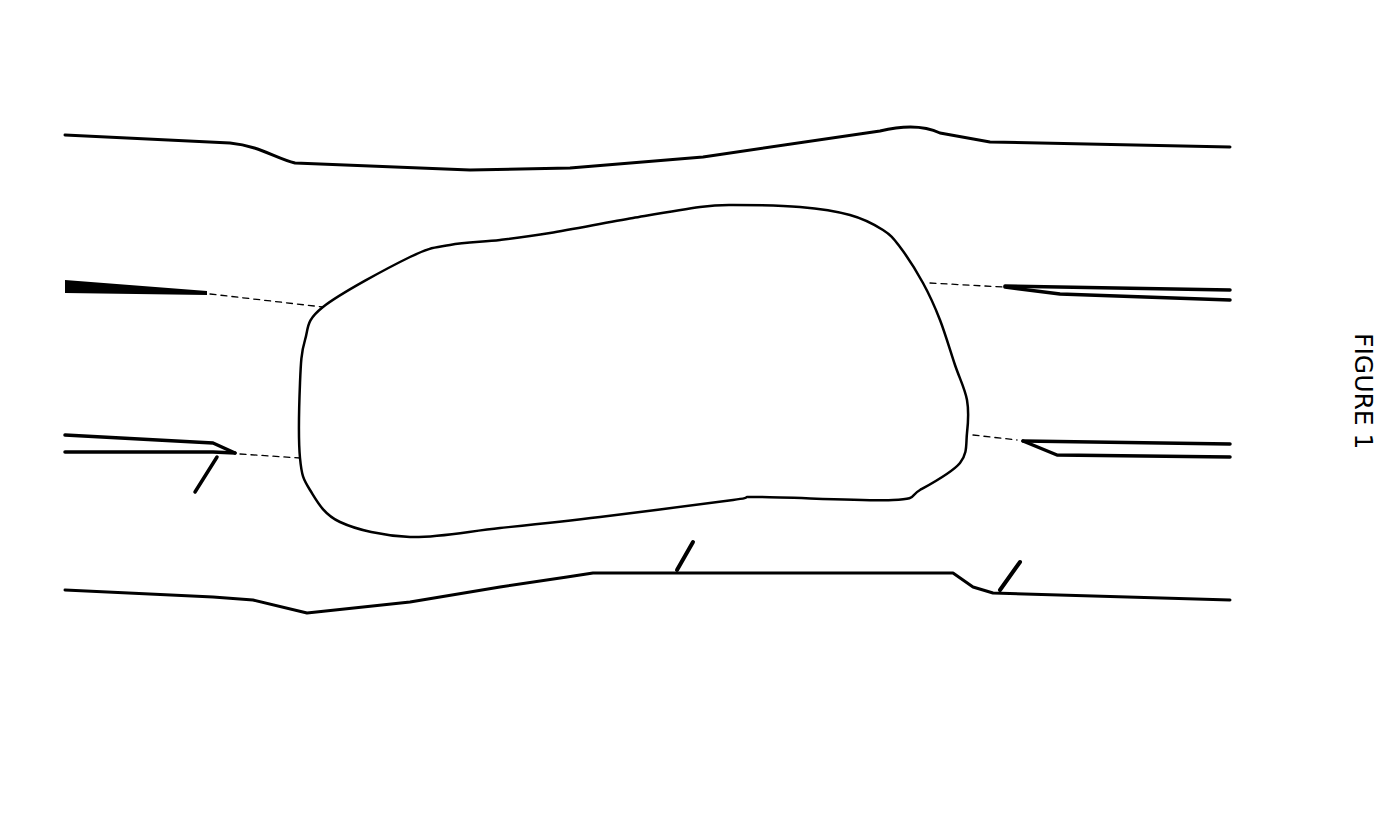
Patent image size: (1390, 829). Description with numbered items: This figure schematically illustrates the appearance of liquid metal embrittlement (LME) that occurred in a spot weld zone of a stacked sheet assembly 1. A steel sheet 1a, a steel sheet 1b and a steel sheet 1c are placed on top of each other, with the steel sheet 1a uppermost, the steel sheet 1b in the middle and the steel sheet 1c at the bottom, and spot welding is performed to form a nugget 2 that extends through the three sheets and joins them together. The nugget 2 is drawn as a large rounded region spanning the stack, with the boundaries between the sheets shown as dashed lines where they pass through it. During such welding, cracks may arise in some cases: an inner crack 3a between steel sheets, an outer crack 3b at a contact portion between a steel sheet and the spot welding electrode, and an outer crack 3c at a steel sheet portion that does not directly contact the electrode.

The steel sheet 1 is at (593, 134).
The steel sheet 1a is at (1072, 247).
The steel sheet 1b is at (1072, 398).
The steel sheet 1c is at (1108, 553).
The nugget 2 is at (645, 386).
The inner crack 3a is at (202, 478).
The outer crack 3b is at (690, 557).
The outer crack 3c is at (1013, 577).